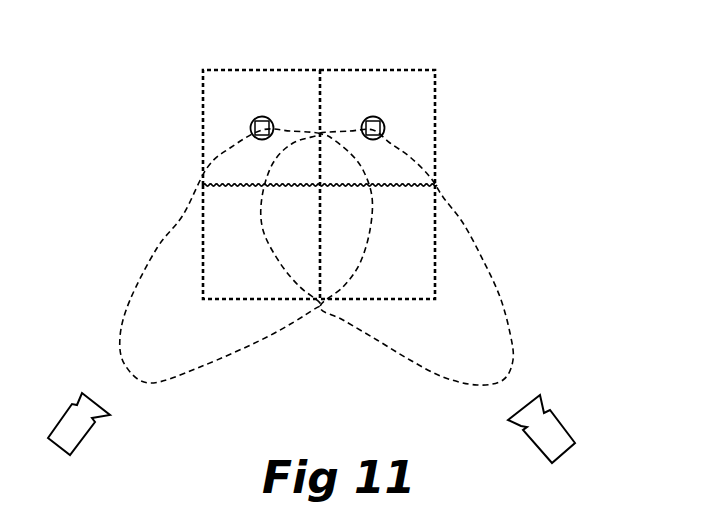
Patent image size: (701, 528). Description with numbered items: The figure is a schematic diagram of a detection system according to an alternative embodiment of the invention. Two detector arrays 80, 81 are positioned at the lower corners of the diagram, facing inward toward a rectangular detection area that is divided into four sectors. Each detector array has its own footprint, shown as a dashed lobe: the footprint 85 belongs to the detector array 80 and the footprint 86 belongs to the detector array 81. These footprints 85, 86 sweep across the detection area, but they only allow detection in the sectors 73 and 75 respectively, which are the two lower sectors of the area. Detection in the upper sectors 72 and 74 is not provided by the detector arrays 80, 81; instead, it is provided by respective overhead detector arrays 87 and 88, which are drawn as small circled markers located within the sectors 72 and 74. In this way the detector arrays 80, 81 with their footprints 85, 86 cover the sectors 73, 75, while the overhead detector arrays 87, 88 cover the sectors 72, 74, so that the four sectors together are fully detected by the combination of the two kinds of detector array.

The sector 72 is at (240, 95).
The sector 74 is at (377, 103).
The sector 73 is at (230, 222).
The sector 75 is at (398, 213).
The overhead detector array 87 is at (251, 129).
The overhead detector array 88 is at (384, 128).
The footprint 85 is at (155, 248).
The footprint 86 is at (483, 260).
The detector array 80 is at (67, 429).
The detector array 81 is at (553, 443).